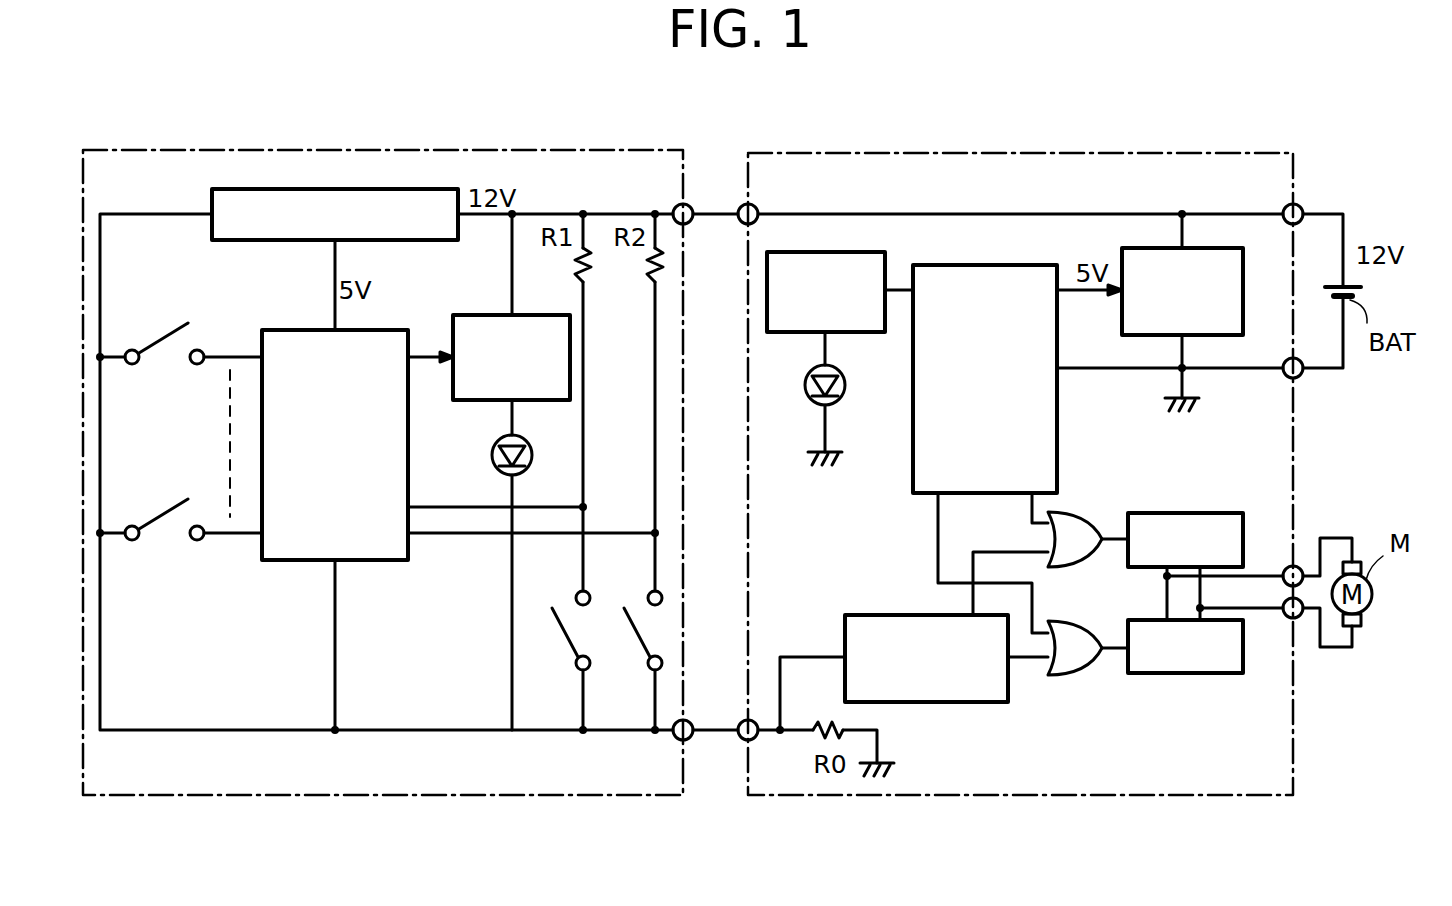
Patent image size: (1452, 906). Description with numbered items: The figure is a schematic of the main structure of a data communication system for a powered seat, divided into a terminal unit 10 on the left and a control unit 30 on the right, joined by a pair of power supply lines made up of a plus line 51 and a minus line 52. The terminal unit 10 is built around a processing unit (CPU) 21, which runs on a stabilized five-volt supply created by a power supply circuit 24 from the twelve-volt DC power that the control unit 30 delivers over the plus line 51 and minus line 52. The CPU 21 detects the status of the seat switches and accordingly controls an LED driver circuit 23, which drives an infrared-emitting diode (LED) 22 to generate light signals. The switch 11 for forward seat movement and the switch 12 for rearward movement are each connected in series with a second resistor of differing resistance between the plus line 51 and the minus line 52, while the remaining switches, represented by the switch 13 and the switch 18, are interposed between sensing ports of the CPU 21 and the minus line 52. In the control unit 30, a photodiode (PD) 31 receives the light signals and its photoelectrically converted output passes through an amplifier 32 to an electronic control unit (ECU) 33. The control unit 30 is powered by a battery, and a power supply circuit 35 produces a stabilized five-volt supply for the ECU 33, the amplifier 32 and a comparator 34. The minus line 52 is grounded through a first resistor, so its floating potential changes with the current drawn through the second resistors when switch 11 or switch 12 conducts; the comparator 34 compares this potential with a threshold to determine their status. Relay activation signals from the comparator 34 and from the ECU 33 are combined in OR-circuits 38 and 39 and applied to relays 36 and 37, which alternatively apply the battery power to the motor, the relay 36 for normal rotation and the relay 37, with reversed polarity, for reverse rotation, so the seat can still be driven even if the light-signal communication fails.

The terminal unit 10 is at (372, 178).
The switch 11 is at (568, 637).
The switch 12 is at (640, 637).
The switch 13 is at (158, 330).
The switch 18 is at (156, 507).
The processing unit (CPU) 21 is at (373, 563).
The infrared-emitting diode (LED) 22 is at (523, 447).
The LED driver circuit 23 is at (490, 312).
The power supply circuit 24 is at (212, 190).
The control unit 30 is at (1068, 181).
The photodiode (PD) 31 is at (812, 397).
The amplifier 32 is at (857, 251).
The electronic control unit (ECU) 33 is at (1057, 453).
The comparator 34 is at (972, 703).
The power supply circuit 35 is at (1243, 285).
The relay 36 is at (1210, 513).
The relay 37 is at (1210, 673).
The OR-circuit 38 is at (1080, 560).
The OR-circuit 39 is at (1080, 670).
The plus line 51 is at (714, 206).
The minus line 52 is at (720, 738).